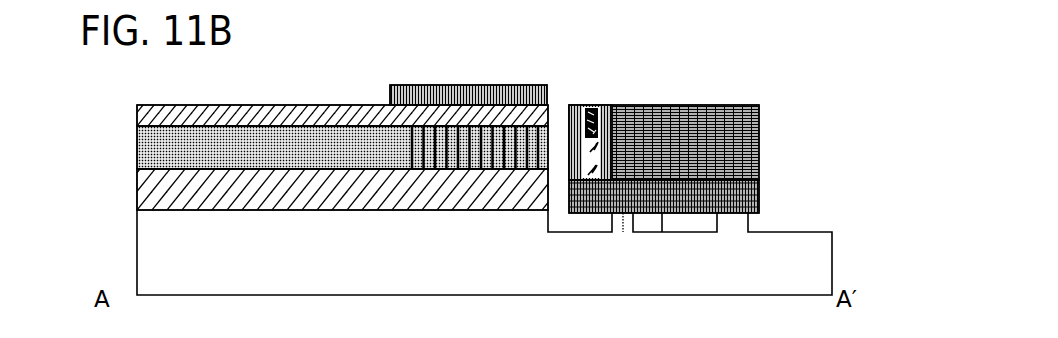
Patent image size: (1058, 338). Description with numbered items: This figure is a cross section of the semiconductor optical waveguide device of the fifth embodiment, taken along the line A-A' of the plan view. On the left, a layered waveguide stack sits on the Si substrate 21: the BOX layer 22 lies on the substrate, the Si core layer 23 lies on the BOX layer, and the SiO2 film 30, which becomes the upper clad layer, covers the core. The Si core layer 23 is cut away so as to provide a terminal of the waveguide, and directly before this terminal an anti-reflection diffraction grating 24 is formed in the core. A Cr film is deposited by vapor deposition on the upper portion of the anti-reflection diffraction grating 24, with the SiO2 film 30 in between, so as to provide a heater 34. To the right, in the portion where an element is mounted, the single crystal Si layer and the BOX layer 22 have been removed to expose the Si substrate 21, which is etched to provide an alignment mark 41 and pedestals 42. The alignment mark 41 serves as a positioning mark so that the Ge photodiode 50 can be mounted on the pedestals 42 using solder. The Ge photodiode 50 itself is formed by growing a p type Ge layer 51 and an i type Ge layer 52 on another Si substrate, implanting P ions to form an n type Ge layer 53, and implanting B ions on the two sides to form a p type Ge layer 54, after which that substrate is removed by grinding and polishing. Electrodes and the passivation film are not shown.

The Si substrate 21 is at (146, 247).
The BOX layer 22 is at (143, 198).
The Si core layer 23 is at (283, 155).
The anti-reflection diffraction grating 24 is at (538, 220).
The SiO2 film 30 is at (143, 116).
The heater 34 is at (478, 85).
The alignment mark 41 is at (616, 232).
The pedestals 42 is at (648, 232).
The Ge photodiode 50 is at (707, 130).
The p type Ge layer 51 is at (691, 196).
The i type Ge layer 52 is at (603, 105).
The n type Ge layer 53 is at (592, 105).
The p type Ge layer 54 is at (691, 113).